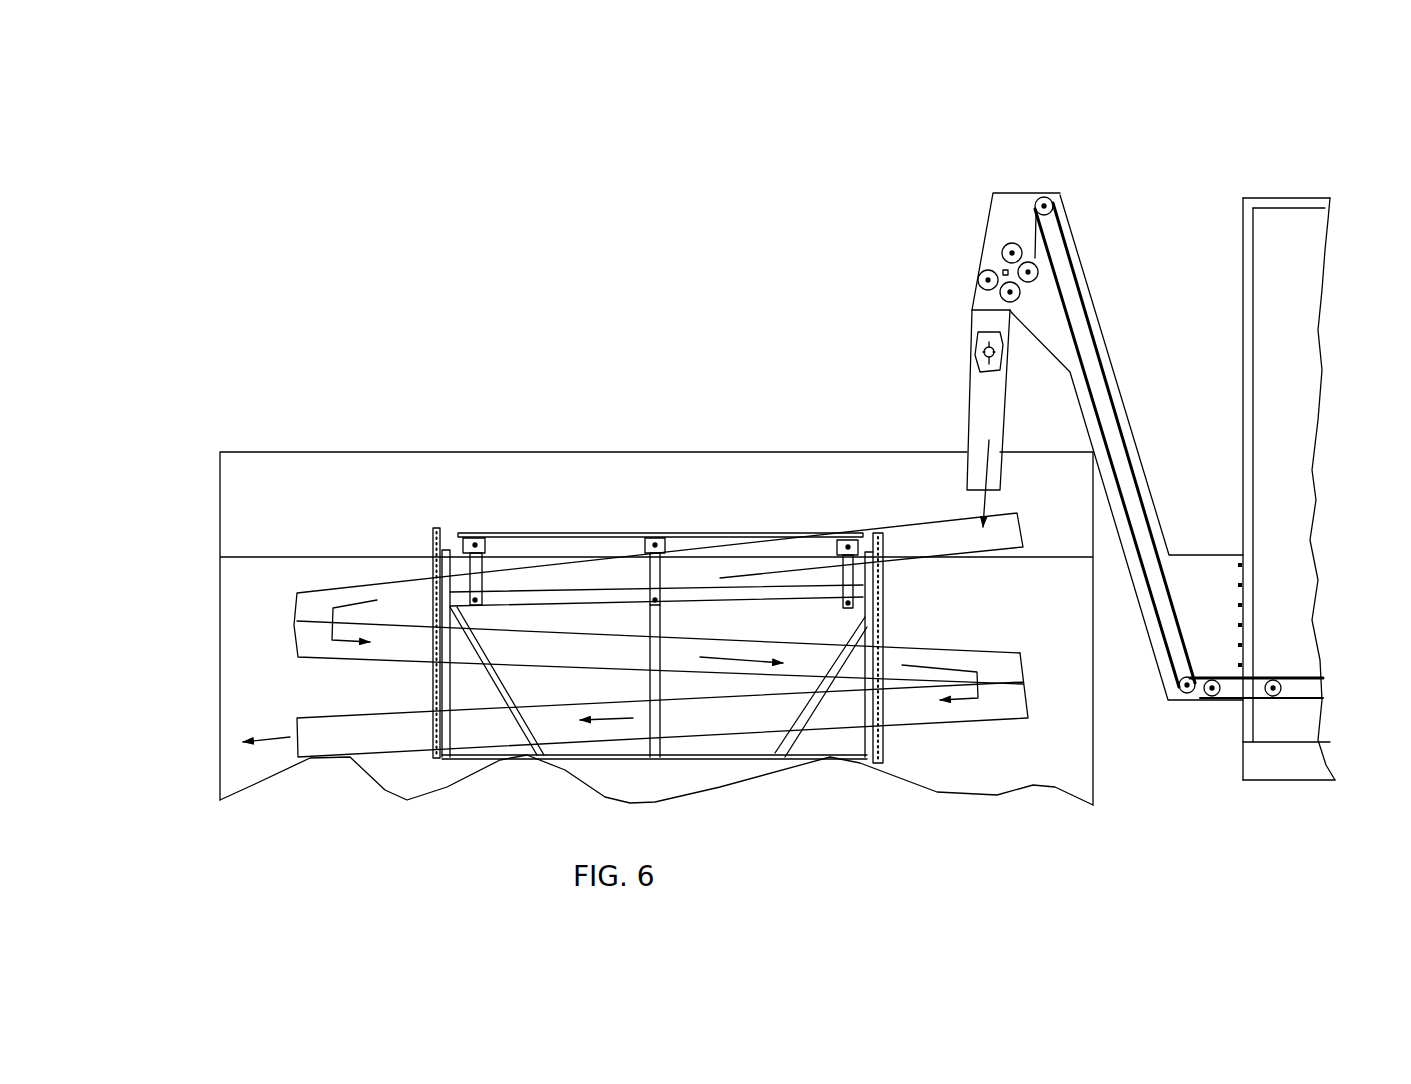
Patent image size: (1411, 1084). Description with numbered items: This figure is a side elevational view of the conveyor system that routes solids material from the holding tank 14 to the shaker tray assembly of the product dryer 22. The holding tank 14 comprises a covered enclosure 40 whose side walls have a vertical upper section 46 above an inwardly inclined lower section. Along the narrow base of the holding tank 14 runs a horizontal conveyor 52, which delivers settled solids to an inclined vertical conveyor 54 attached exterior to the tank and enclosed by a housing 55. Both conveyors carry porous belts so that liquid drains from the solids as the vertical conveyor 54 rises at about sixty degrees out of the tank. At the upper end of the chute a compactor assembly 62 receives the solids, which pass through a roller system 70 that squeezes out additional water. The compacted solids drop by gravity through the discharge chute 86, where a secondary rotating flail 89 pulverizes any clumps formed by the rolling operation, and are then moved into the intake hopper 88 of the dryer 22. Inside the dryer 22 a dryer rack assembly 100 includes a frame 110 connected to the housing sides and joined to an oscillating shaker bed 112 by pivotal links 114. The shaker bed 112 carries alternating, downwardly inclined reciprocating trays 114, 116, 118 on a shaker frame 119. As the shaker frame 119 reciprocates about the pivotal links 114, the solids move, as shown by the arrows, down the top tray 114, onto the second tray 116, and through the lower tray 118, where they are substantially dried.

The holding tank 14 is at (1292, 194).
The product dryer 22 is at (280, 407).
The covered enclosure 40 is at (1240, 197).
The vertical upper section 46 is at (1240, 268).
The horizontal conveyor 52 is at (1292, 678).
The inclined vertical conveyor 54 is at (1083, 315).
The housing 55 is at (1160, 673).
The compactor assembly 62 is at (990, 192).
The roller system 70 is at (990, 256).
The discharge chute 86 is at (975, 400).
The intake hopper 88 is at (808, 472).
The secondary rotating flail 89 is at (985, 350).
The dryer rack assembly 100 is at (595, 515).
The frame 110 is at (683, 532).
The oscillating shaker bed 112 is at (272, 485).
The pivotal links 114 is at (658, 583).
The second tray 116 is at (313, 638).
The lower tray 118 is at (307, 727).
The shaker frame 119 is at (682, 757).